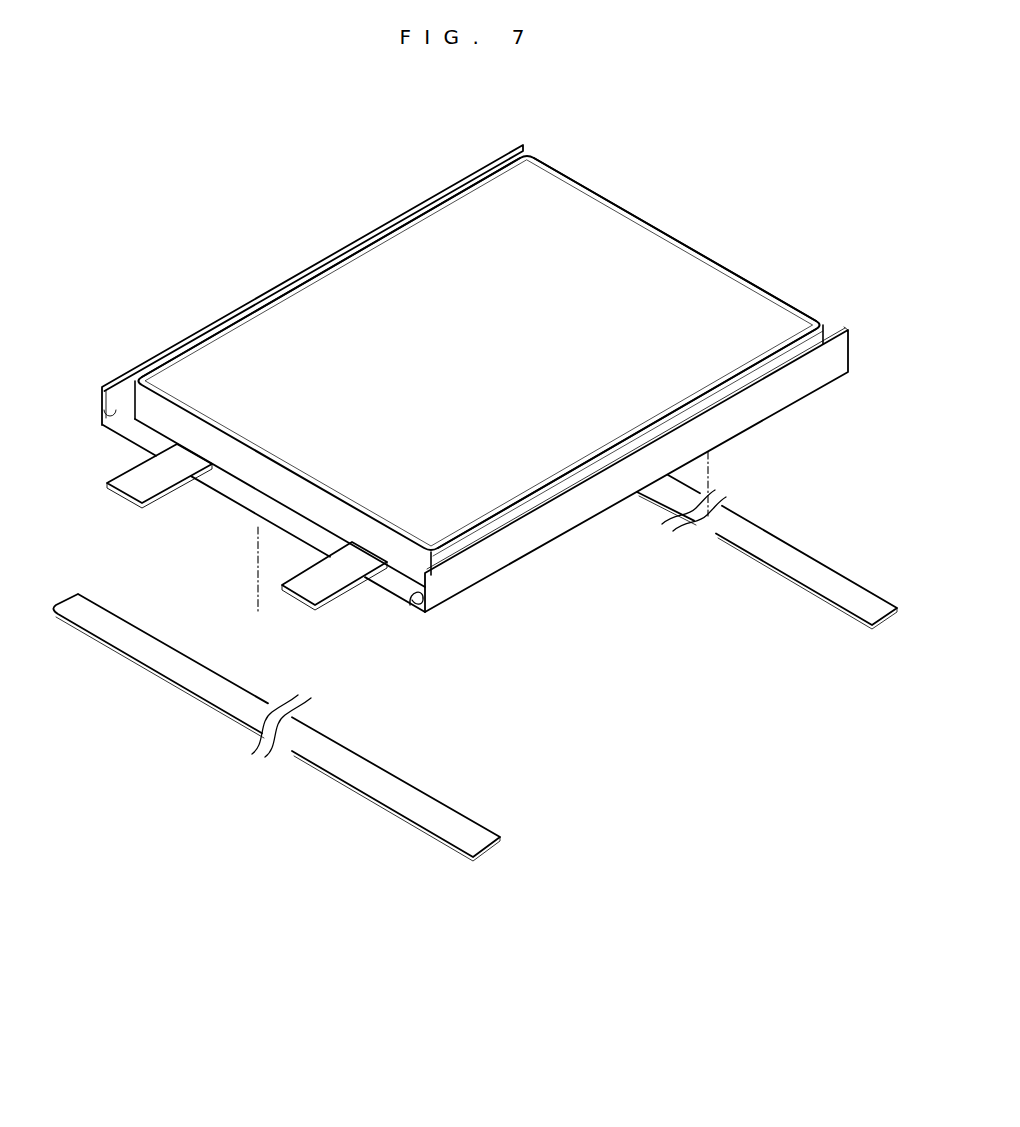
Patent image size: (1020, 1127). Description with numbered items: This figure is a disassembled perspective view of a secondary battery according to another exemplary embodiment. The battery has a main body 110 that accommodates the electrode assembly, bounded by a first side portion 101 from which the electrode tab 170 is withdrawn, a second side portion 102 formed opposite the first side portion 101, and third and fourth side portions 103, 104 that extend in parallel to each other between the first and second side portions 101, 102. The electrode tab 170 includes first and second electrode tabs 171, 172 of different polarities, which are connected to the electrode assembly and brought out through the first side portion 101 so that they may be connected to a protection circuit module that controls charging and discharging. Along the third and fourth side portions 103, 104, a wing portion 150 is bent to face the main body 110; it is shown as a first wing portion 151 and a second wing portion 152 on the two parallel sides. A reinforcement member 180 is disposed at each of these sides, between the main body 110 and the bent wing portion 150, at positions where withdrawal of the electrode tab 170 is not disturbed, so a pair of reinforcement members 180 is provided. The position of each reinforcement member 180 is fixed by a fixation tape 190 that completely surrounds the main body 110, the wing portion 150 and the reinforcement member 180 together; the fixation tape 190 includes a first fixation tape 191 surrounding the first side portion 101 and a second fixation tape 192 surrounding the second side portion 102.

The main body 110 is at (586, 210).
The first side portion 101 is at (243, 523).
The second side portion 102 is at (688, 231).
The third side portion 103 is at (614, 511).
The fourth side portion 104 is at (320, 252).
The wing portion 150 is at (455, 426).
The first wing portion 151 is at (150, 342).
The second wing portion 152 is at (487, 593).
The electrode tab 170 is at (223, 567).
The first electrode tab 171 is at (125, 490).
The second electrode tab 172 is at (310, 590).
The reinforcement member 180 is at (100, 428).
The fixation tape 190 is at (475, 703).
The first fixation tape 191 is at (460, 840).
The second fixation tape 192 is at (858, 608).